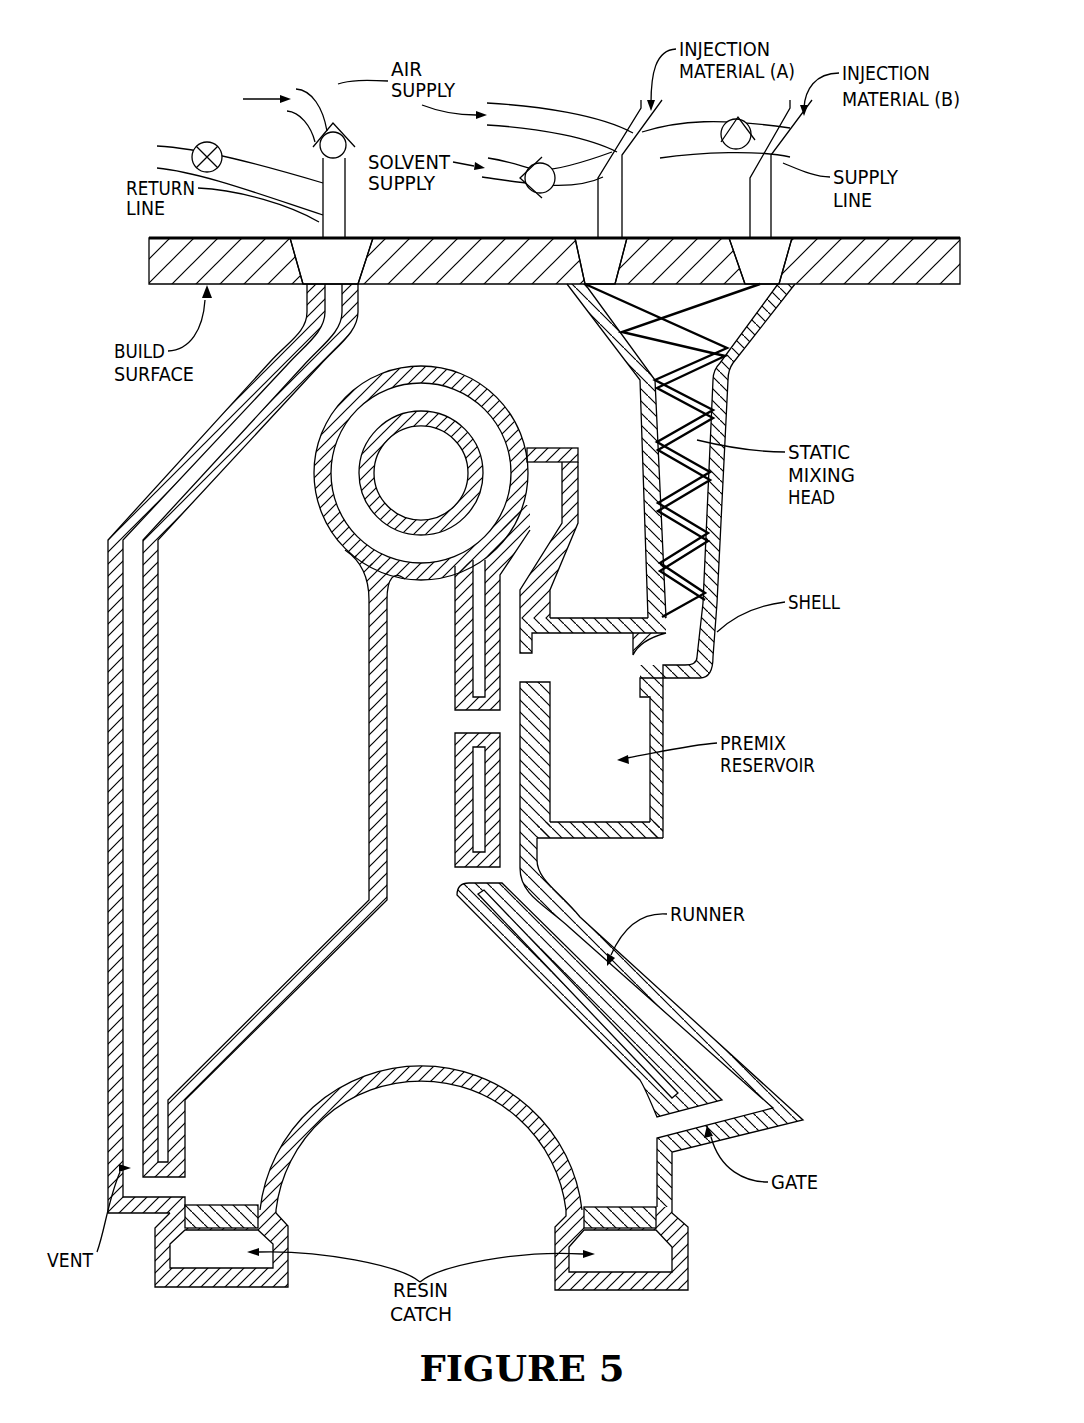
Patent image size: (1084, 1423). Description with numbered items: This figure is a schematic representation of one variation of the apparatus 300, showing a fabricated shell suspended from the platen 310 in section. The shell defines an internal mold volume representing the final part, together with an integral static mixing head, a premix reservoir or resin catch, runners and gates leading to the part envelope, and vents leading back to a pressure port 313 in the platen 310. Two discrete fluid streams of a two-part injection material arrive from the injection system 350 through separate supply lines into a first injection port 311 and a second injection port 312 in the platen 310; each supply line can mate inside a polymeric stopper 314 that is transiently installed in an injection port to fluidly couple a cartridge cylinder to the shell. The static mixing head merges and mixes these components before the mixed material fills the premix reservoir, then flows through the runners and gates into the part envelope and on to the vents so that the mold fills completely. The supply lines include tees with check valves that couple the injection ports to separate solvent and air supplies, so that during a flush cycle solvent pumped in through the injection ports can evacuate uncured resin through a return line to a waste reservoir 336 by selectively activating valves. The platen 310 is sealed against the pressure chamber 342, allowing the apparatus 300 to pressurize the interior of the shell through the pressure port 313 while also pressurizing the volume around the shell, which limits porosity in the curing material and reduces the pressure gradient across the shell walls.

The apparatus 300 is at (882, 996).
The platen 310 is at (157, 266).
The first injection port 311 is at (582, 227).
The second injection port 312 is at (781, 249).
The pressure port 313 is at (279, 301).
The stopper 314 is at (741, 239).
The waste reservoir 336 is at (172, 157).
The pressure chamber 342 is at (377, 145).
The injection system 350 is at (887, 64).